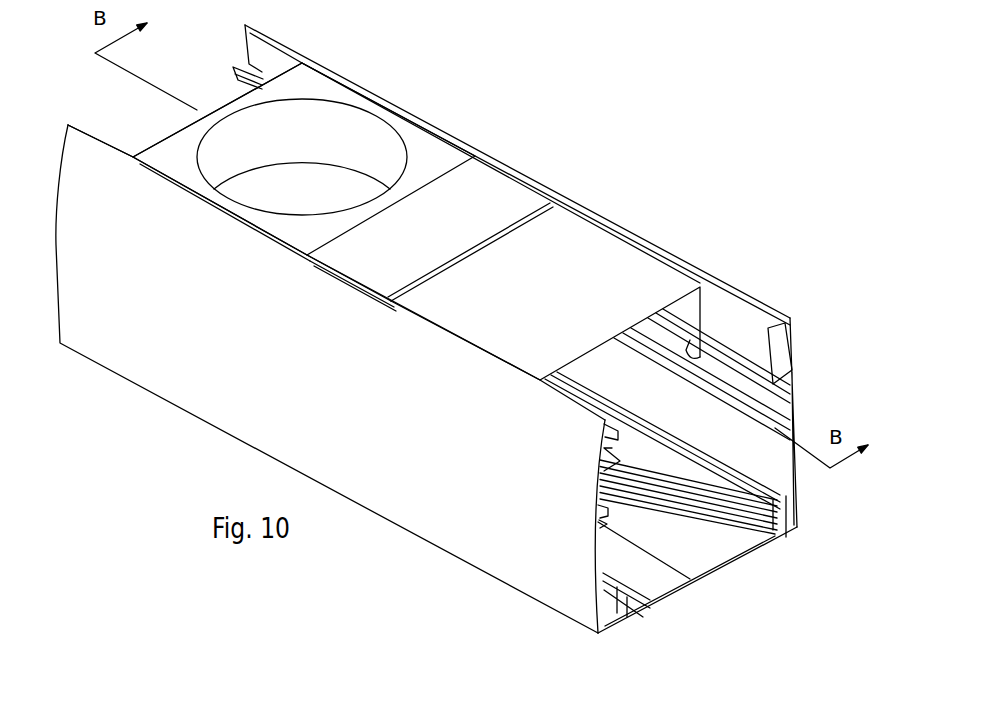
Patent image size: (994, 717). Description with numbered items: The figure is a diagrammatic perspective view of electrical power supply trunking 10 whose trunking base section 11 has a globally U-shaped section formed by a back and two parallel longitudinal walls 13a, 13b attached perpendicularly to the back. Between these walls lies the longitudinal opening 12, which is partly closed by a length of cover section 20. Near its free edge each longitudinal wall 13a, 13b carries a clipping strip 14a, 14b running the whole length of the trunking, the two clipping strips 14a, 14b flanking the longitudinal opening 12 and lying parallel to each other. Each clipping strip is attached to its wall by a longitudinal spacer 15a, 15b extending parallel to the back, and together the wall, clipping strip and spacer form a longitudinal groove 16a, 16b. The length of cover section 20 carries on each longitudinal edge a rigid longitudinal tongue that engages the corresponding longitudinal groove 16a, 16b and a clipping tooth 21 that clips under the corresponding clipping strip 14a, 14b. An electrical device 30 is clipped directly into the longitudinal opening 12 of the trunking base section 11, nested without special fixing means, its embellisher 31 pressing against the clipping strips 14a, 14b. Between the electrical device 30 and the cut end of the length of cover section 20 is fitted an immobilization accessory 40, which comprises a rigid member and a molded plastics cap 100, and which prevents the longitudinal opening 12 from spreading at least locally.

The cap 100 is at (487, 193).
The electrical power supply trunking 10 is at (743, 570).
The trunking base section 11 is at (683, 590).
The longitudinal opening 12 is at (140, 127).
The longitudinal wall 13a is at (800, 467).
The longitudinal wall 13b is at (558, 592).
The clipping strip 14a is at (787, 367).
The clipping strip 14b is at (627, 461).
The longitudinal spacer 15a is at (798, 383).
The longitudinal spacer 15b is at (603, 480).
The longitudinal groove 16a is at (767, 348).
The longitudinal groove 16b is at (603, 445).
The length of cover section 20 is at (653, 267).
The clipping tooth 21 is at (697, 370).
The electrical device 30 is at (310, 73).
The embellisher 31 is at (423, 143).
The immobilization accessory 40 is at (550, 190).